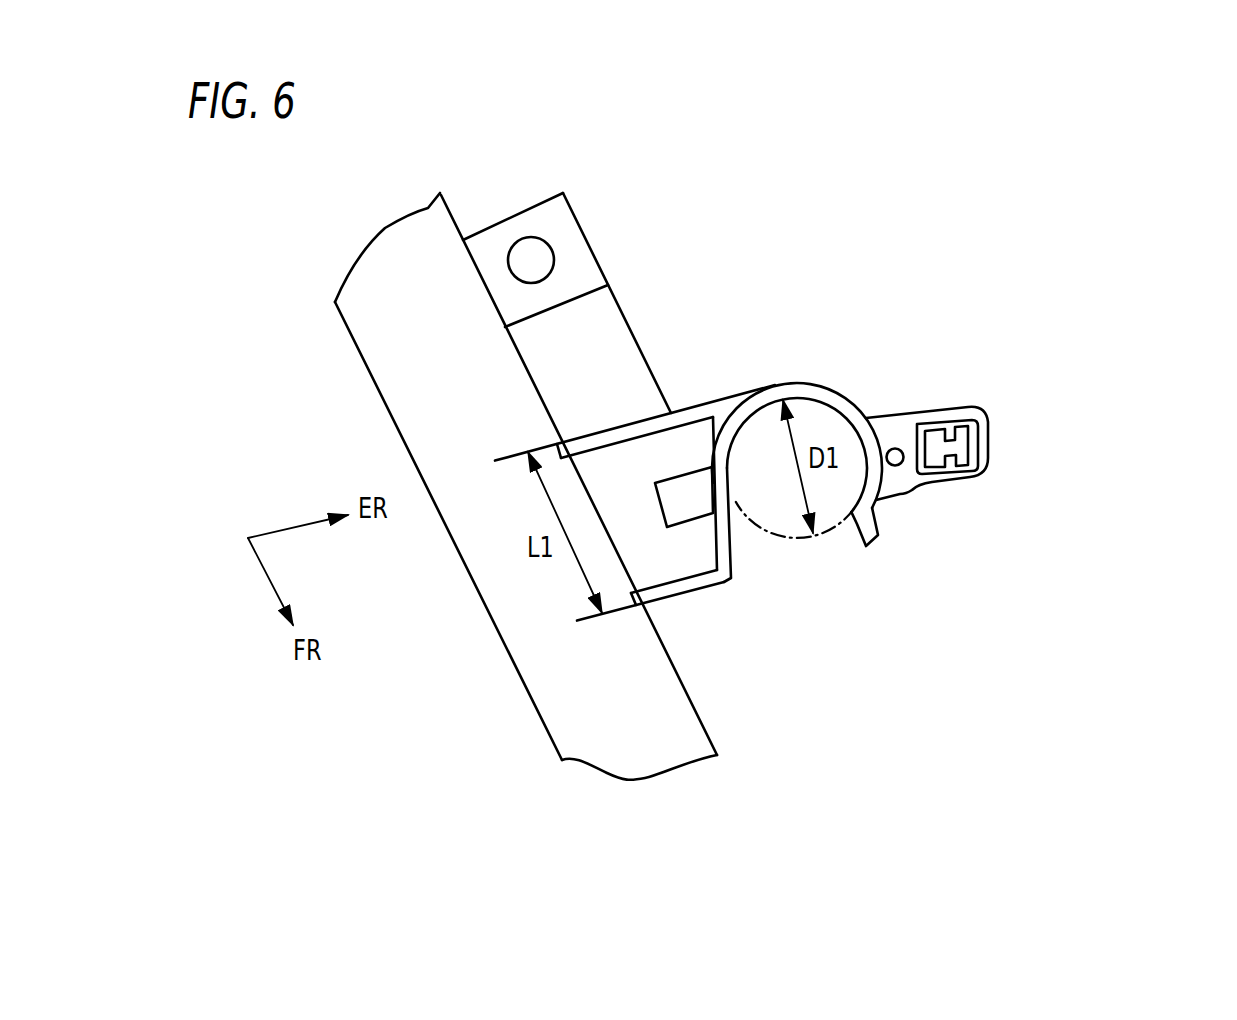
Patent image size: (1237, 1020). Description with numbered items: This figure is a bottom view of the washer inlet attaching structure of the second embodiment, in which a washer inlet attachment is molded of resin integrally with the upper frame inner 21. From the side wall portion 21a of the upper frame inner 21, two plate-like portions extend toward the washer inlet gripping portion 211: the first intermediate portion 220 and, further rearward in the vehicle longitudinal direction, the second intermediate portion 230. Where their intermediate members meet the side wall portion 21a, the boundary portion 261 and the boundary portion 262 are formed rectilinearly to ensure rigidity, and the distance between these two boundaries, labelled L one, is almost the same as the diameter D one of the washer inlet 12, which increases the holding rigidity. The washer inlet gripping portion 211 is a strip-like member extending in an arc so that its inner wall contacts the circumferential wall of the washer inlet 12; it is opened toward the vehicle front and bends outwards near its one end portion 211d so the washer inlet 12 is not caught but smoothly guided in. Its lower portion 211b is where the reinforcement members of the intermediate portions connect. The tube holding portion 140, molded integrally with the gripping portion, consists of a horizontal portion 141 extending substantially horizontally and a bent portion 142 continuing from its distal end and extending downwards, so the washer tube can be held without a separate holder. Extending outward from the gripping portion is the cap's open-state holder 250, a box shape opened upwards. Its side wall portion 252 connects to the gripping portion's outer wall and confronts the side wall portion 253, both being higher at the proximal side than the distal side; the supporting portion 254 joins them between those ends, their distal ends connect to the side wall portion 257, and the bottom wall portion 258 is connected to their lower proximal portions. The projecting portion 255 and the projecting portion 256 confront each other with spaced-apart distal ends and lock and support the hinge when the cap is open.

The washer inlet 12 is at (770, 548).
The upper frame inner 21 is at (532, 486).
The side wall portion 21a is at (712, 738).
The tube holding portion 140 is at (790, 319).
The horizontal portion 141 is at (692, 487).
The bent portion 142 is at (665, 493).
The washer inlet gripping portion 211 is at (852, 435).
The lower portion of the washer inlet gripping portion 211b is at (844, 399).
The end portion of the washer inlet gripping portion 211d is at (870, 549).
The first intermediate portion 220 is at (690, 592).
The second intermediate portion 230 is at (645, 419).
The cap's open-state holder 250 is at (1044, 446).
The side wall portion 252 is at (958, 481).
The side wall portion 253 is at (940, 410).
The supporting portion 254 is at (925, 479).
The projecting portion 255 is at (980, 473).
The projecting portion 256 is at (954, 421).
The side wall portion 257 is at (988, 443).
The bottom wall portion 258 is at (896, 437).
The boundary portion 261 is at (637, 594).
The boundary portion 262 is at (563, 446).